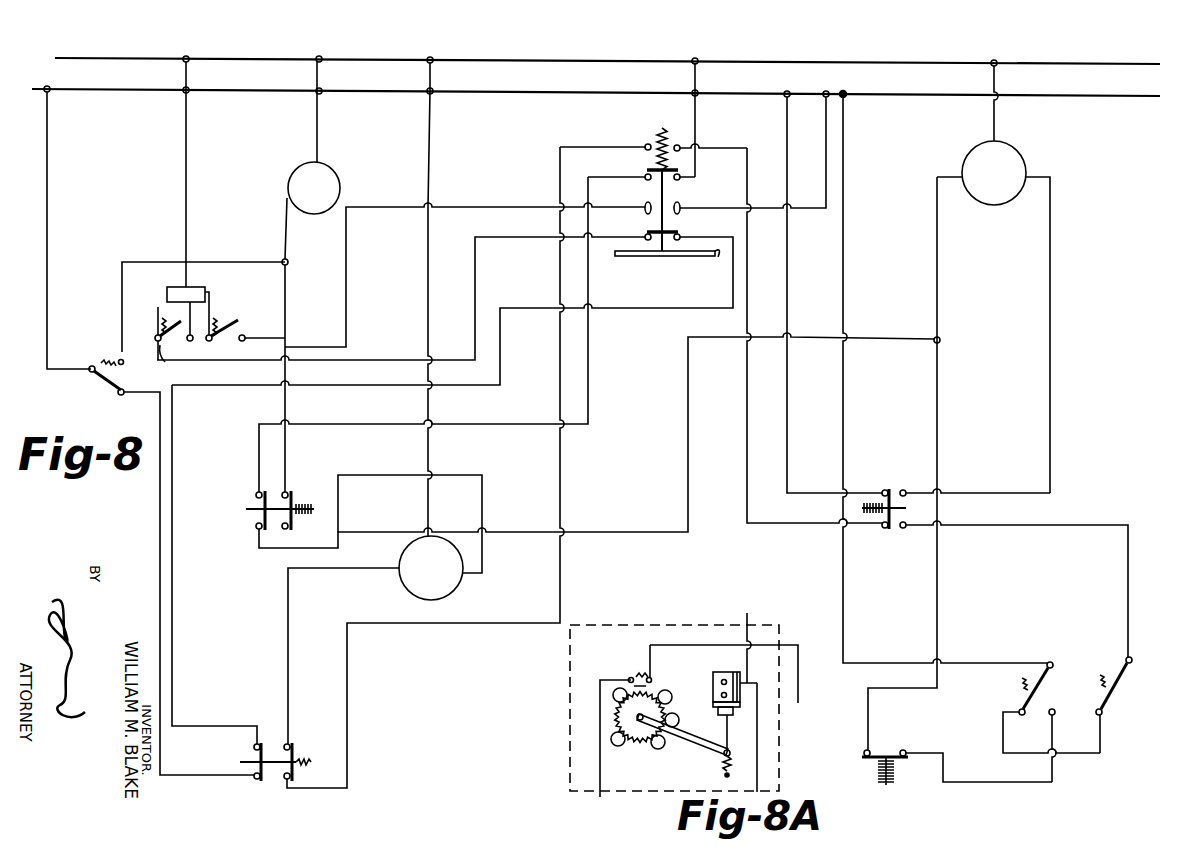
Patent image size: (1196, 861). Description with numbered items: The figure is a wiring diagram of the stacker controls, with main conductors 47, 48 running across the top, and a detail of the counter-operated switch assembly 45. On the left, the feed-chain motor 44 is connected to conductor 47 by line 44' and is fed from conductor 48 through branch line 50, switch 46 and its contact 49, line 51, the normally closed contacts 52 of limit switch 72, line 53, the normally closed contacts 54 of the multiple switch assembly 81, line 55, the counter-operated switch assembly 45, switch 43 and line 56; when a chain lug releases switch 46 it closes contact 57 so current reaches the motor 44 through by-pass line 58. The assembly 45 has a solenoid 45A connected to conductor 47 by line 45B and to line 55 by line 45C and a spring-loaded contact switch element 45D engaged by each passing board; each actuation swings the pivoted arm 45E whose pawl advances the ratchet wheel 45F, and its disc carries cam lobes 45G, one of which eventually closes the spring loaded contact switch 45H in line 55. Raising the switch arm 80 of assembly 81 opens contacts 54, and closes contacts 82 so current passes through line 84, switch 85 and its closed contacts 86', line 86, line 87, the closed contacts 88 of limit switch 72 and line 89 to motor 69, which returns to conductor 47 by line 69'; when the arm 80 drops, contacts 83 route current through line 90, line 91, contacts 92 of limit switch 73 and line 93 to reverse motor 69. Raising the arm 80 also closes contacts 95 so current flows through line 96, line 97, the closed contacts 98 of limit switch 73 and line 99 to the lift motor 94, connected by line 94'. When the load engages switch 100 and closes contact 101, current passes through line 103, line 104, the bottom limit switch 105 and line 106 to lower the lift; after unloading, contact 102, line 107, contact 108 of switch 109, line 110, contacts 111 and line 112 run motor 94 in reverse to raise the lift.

In FIG. 8, the switch 43 is at (215, 312).
In FIG. 8, the motor 44 is at (314, 188).
In FIG. 8, the line 44' is at (334, 112).
In FIG. 8, the counter-operated switch assembly 45 is at (208, 282).
In FIG. 8A, the counter-operated switch assembly 45 is at (568, 717).
In FIG. 8A, the solenoid 45A is at (724, 672).
In FIG. 8, the line 45B is at (186, 182).
In FIG. 8A, the line 45B is at (748, 620).
In FIG. 8, the line 45C is at (190, 312).
In FIG. 8A, the line 45C is at (759, 752).
In FIG. 8, the spring-loaded contact switch element 45D is at (165, 365).
In FIG. 8A, the pivoted arm 45E is at (688, 745).
In FIG. 8A, the ratchet wheel 45F is at (637, 742).
In FIG. 8A, the cam lobes 45G is at (662, 706).
In FIG. 8A, the spring loaded contact switch 45H is at (638, 676).
In FIG. 8, the switch 46 is at (93, 377).
In FIG. 8, the main conductor 47 is at (905, 64).
In FIG. 8, the main conductor 48 is at (916, 94).
In FIG. 8, the contact 49 is at (119, 395).
In FIG. 8, the branch line 50 is at (47, 190).
In FIG. 8, the line 51 is at (158, 498).
In FIG. 8, the contacts 52 is at (254, 747).
In FIG. 8, the line 53 is at (172, 600).
In FIG. 8, the contacts 54 is at (645, 237).
In FIG. 8, the line 55 is at (167, 292).
In FIG. 8A, the line 55 is at (800, 698).
In FIG. 8, the line 56 is at (287, 302).
In FIG. 8, the contact 57 is at (123, 358).
In FIG. 8, the by-pass line 58 is at (233, 258).
In FIG. 8, the motor 69 is at (431, 568).
In FIG. 8, the line 69' is at (445, 299).
In FIG. 8, the limit switch 72 is at (276, 760).
In FIG. 8, the limit switch 73 is at (248, 508).
In FIG. 8, the switch arm 80 is at (655, 256).
In FIG. 8, the multiple switch assembly 81 is at (671, 152).
In FIG. 8, the contacts 82 is at (645, 145).
In FIG. 8, the contacts 83 is at (647, 180).
In FIG. 8, the line 84 is at (788, 128).
In FIG. 8, the switch 85 is at (885, 505).
In FIG. 8, the line 86 is at (794, 350).
In FIG. 8, the contacts 86' is at (885, 491).
In FIG. 8, the line 87 is at (561, 450).
In FIG. 8, the contacts 88 is at (289, 745).
In FIG. 8, the line 89 is at (289, 597).
In FIG. 8, the line 90 is at (695, 128).
In FIG. 8, the line 91 is at (589, 362).
In FIG. 8, the contacts 92 is at (256, 495).
In FIG. 8, the line 93 is at (383, 473).
In FIG. 8, the lift motor 94 is at (993, 332).
In FIG. 8, the line 94' is at (1015, 103).
In FIG. 8, the contacts 95 is at (645, 208).
In FIG. 8, the line 96 is at (812, 214).
In FIG. 8, the line 97 is at (492, 207).
In FIG. 8, the contacts 98 is at (288, 492).
In FIG. 8, the line 99 is at (350, 531).
In FIG. 8, the switch 100 is at (1053, 667).
In FIG. 8, the contact 101 is at (1055, 710).
In FIG. 8, the contact 102 is at (1027, 722).
In FIG. 8, the line 103 is at (844, 270).
In FIG. 8, the line 104 is at (1000, 785).
In FIG. 8, the bottom limit switch 105 is at (887, 752).
In FIG. 8, the line 106 is at (936, 603).
In FIG. 8, the line 107 is at (1002, 743).
In FIG. 8, the contact 108 is at (1102, 715).
In FIG. 8, the switch 109 is at (1130, 666).
In FIG. 8, the line 110 is at (1130, 565).
In FIG. 8, the contacts 111 is at (905, 490).
In FIG. 8, the line 112 is at (983, 492).